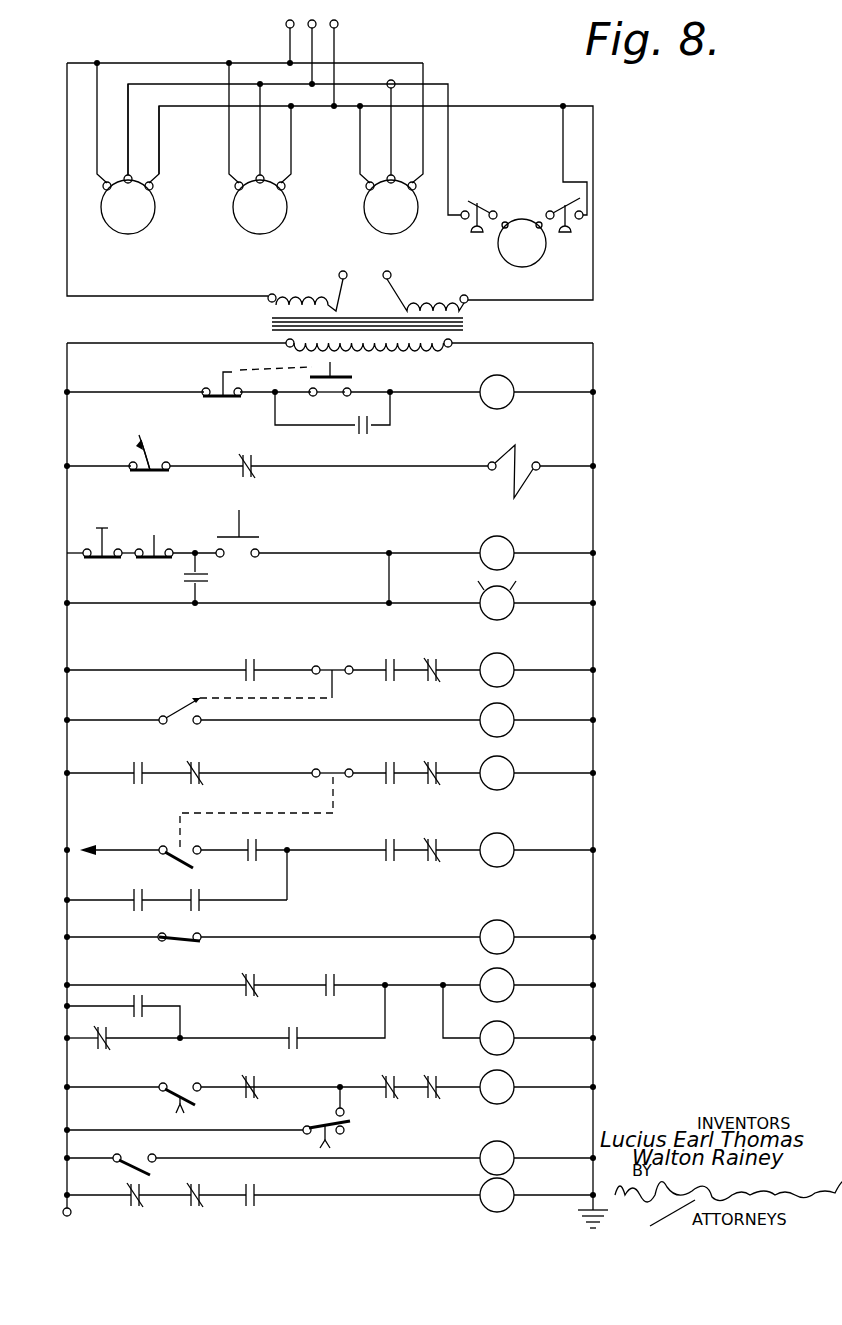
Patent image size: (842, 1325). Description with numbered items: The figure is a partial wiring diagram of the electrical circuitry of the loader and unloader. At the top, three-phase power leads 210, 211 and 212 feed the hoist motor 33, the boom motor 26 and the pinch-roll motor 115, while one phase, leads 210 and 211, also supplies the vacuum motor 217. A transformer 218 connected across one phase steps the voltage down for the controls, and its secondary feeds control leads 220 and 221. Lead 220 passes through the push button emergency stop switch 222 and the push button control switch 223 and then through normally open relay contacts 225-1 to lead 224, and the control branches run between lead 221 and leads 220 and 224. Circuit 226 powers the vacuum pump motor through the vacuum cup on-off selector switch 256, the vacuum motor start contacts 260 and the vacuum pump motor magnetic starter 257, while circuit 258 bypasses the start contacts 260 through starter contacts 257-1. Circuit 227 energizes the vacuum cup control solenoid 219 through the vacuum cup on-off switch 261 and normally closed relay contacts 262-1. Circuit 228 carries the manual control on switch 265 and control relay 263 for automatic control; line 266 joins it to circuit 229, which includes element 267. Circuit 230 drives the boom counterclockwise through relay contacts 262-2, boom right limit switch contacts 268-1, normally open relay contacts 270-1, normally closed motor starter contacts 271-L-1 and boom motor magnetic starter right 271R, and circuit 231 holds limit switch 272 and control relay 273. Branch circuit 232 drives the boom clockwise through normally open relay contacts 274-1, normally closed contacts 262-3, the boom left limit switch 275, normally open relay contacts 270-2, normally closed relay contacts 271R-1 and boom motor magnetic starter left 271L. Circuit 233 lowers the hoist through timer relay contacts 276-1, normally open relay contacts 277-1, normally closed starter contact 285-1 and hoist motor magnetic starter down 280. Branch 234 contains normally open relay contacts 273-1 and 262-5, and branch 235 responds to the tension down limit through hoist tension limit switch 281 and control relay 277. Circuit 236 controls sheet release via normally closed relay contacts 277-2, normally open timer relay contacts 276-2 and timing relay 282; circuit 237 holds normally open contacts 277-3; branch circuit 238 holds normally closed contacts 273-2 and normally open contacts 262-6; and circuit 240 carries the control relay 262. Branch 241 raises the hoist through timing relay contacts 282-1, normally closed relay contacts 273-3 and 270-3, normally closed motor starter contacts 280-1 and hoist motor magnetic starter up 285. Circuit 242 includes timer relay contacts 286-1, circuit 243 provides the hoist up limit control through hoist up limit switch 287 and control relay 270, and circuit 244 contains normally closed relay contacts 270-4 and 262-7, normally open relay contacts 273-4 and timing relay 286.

The power lead 210 is at (287, 27).
The power lead 211 is at (318, 21).
The power lead 212 is at (338, 27).
The vacuum motor 217 is at (520, 232).
The hoist motor 33 is at (133, 225).
The boom motor 26 is at (258, 215).
The pinch-roll motor 115 is at (388, 215).
The transformer 218 is at (272, 320).
The lead 220 is at (137, 343).
The lead 221 is at (515, 343).
The circuit 226 is at (83, 392).
The vacuum cup on-off selector switch 256 is at (277, 368).
The vacuum motor start contacts 260 is at (352, 390).
The vacuum pump motor magnetic starter 257 is at (503, 396).
The circuit 258 is at (270, 428).
The vacuum pump motor magnetic starter contacts 257-1 is at (370, 432).
The circuit 227 is at (80, 465).
The vacuum cup on-off switch 261 is at (157, 463).
The normally closed relay contacts 262-1 is at (252, 478).
The vacuum cup control solenoid 219 is at (519, 455).
The push button emergency stop switch 222 is at (120, 514).
The push button control switch 223 is at (157, 536).
The manual control on switch 265 is at (243, 551).
The circuit 228 is at (335, 553).
The control relay 263 is at (505, 560).
The lead 224 is at (88, 590).
The normally open relay contacts 225-1 is at (210, 580).
The line 266 is at (391, 584).
The element 267 is at (507, 610).
The circuit 229 is at (222, 603).
The circuit 230 is at (78, 669).
The relay contacts 262-2 is at (244, 668).
The boom right limit switch contacts 268-1 is at (318, 667).
The normally open relay contacts 270-1 is at (396, 683).
The normally closed motor starter contacts 271-L-1 is at (445, 648).
The boom motor magnetic starter right 271R is at (505, 679).
The circuit 231 is at (88, 712).
The limit switch 272 is at (163, 716).
The control relay 273 is at (508, 726).
The branch circuit 232 is at (78, 773).
The normally open relay contacts 274-1 is at (143, 765).
The normally closed contacts 262-3 is at (205, 765).
The boom left limit switch 275 is at (232, 812).
The normally open relay contacts 270-2 is at (383, 767).
The normally closed relay contacts 271R-1 is at (437, 785).
The boom motor magnetic starter left 271L is at (506, 781).
The circuit 233 is at (118, 832).
The timer relay contacts 276-1 is at (255, 846).
The normally open relay contacts 277-1 is at (385, 848).
The normally closed hoist motor magnetic starter contact 285-1 is at (437, 862).
The hoist motor magnetic starter down 280 is at (507, 856).
The branch 234 is at (88, 889).
The normally open relay contacts 273-1 is at (143, 897).
The normally open relay contacts 262-5 is at (206, 903).
The branch 235 is at (80, 937).
The hoist tension limit switch 281 is at (182, 936).
The control relay 277 is at (507, 945).
The circuit 236 is at (80, 985).
The normally closed relay contacts 277-2 is at (258, 976).
The normally open timer relay contacts 276-2 is at (340, 984).
The timing relay 282 is at (507, 993).
The circuit 237 is at (88, 996).
The normally open control relay contacts 277-3 is at (143, 1009).
The branch circuit 238 is at (90, 1040).
The normally closed relay contacts 273-2 is at (115, 1040).
The normally open relay contacts 262-6 is at (298, 1036).
The control relay 262 is at (483, 1035).
The circuit 240 is at (540, 1038).
The branch 241 is at (100, 1094).
The timing relay contacts 282-1 is at (183, 1090).
The normally closed relay contacts 273-3 is at (258, 1078).
The normally closed relay contacts 270-3 is at (383, 1080).
The normally closed motor starter contacts 280-1 is at (440, 1072).
The hoist motor magnetic starter up 285 is at (507, 1094).
The circuit 242 is at (185, 1120).
The timer relay contacts 286-1 is at (346, 1114).
The circuit 243 is at (88, 1148).
The hoist up limit switch 287 is at (140, 1158).
The control relay 270 is at (506, 1165).
The circuit 244 is at (80, 1195).
The normally closed relay contacts 270-4 is at (128, 1198).
The normally closed relay contacts 262-7 is at (203, 1198).
The normally open relay contacts 273-4 is at (258, 1190).
The timing relay 286 is at (485, 1199).